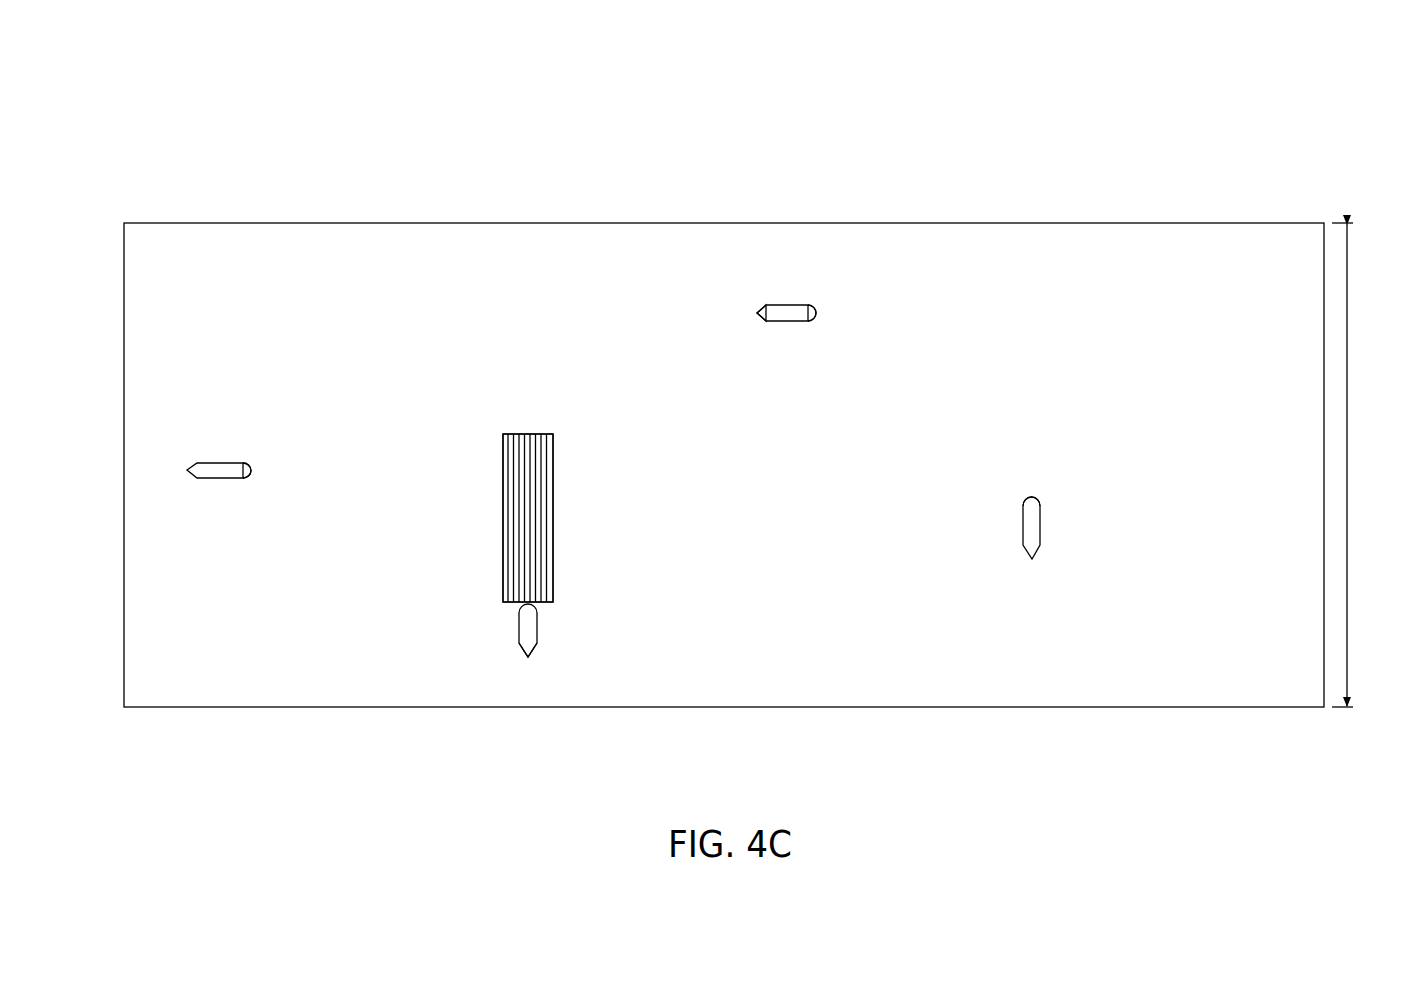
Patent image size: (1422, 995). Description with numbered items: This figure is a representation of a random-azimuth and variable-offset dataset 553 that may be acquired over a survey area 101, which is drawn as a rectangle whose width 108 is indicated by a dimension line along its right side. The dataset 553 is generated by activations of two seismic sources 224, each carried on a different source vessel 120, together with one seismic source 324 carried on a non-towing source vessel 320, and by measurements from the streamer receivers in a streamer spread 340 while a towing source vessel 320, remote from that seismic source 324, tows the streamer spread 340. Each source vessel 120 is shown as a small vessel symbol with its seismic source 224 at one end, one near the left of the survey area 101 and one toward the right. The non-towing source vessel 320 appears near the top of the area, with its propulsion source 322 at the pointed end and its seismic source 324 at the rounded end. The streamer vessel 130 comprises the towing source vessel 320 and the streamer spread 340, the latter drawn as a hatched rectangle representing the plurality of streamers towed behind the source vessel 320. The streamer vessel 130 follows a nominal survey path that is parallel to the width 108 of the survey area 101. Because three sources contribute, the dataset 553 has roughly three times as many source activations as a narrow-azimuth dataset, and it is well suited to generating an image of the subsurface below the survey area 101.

The survey area 101 is at (1176, 222).
The random-azimuth and variable-offset dataset 553 is at (1162, 88).
The width 108 is at (1347, 623).
The source vessel 120 is at (208, 438).
The seismic source 224 is at (248, 464).
The source vessel 320 is at (778, 328).
The propulsion source 322 is at (758, 311).
The seismic source 324 is at (817, 320).
The streamer spread 340 is at (500, 498).
The streamer vessel 130 is at (588, 517).